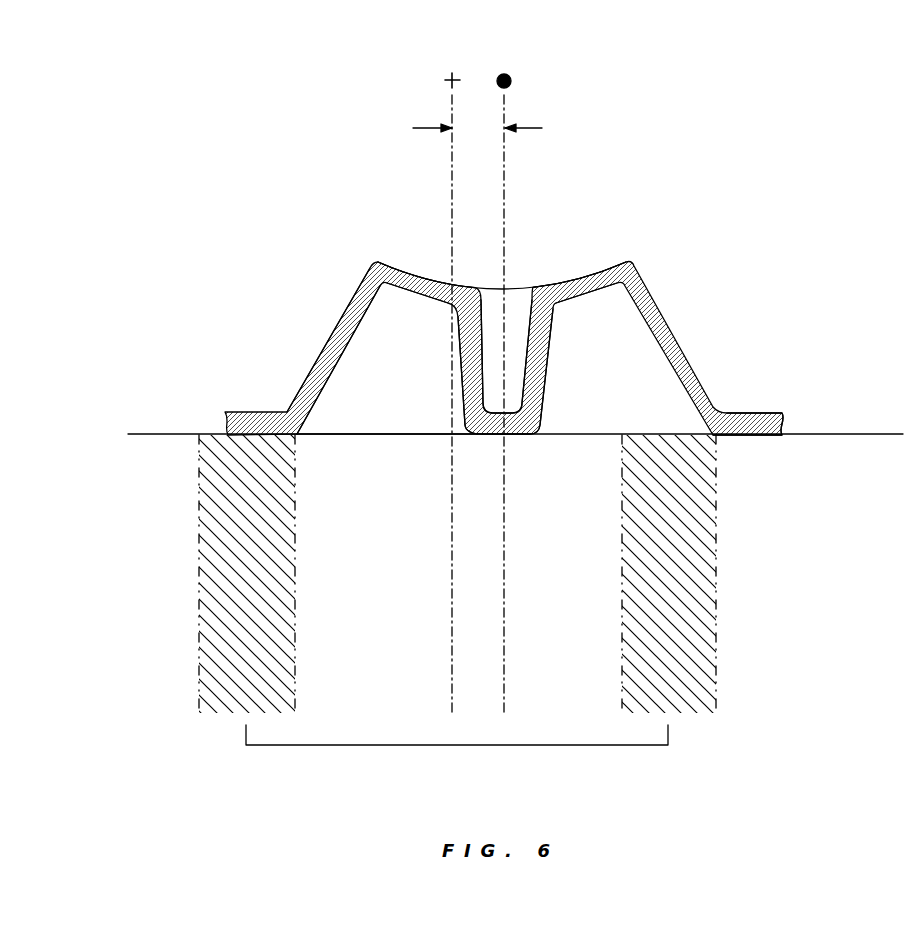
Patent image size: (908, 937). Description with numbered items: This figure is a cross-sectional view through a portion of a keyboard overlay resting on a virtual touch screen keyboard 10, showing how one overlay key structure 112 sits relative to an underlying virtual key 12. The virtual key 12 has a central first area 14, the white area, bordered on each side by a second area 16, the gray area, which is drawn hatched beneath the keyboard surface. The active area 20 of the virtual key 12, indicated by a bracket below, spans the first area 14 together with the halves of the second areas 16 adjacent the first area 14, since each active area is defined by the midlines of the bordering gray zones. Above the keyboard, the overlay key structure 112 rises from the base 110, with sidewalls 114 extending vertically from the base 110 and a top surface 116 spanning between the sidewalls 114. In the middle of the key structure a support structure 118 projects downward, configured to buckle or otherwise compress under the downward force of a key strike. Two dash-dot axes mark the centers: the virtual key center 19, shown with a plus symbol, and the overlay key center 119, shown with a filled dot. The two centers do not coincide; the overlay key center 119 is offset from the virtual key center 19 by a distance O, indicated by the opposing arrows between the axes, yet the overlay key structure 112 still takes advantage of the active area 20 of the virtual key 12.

The virtual touch screen keyboard 10 is at (875, 434).
The virtual key 12 is at (355, 413).
The first area 14 is at (407, 433).
The second area 16 is at (213, 602).
The virtual key center 19 is at (442, 63).
The active area 20 is at (657, 745).
The base 110 is at (748, 413).
The overlay key structure 112 is at (545, 255).
The sidewall 114 is at (338, 335).
The top surface 116 is at (415, 278).
The support structure 118 is at (523, 433).
The overlay key center 119 is at (517, 63).
The offset distance O is at (542, 128).